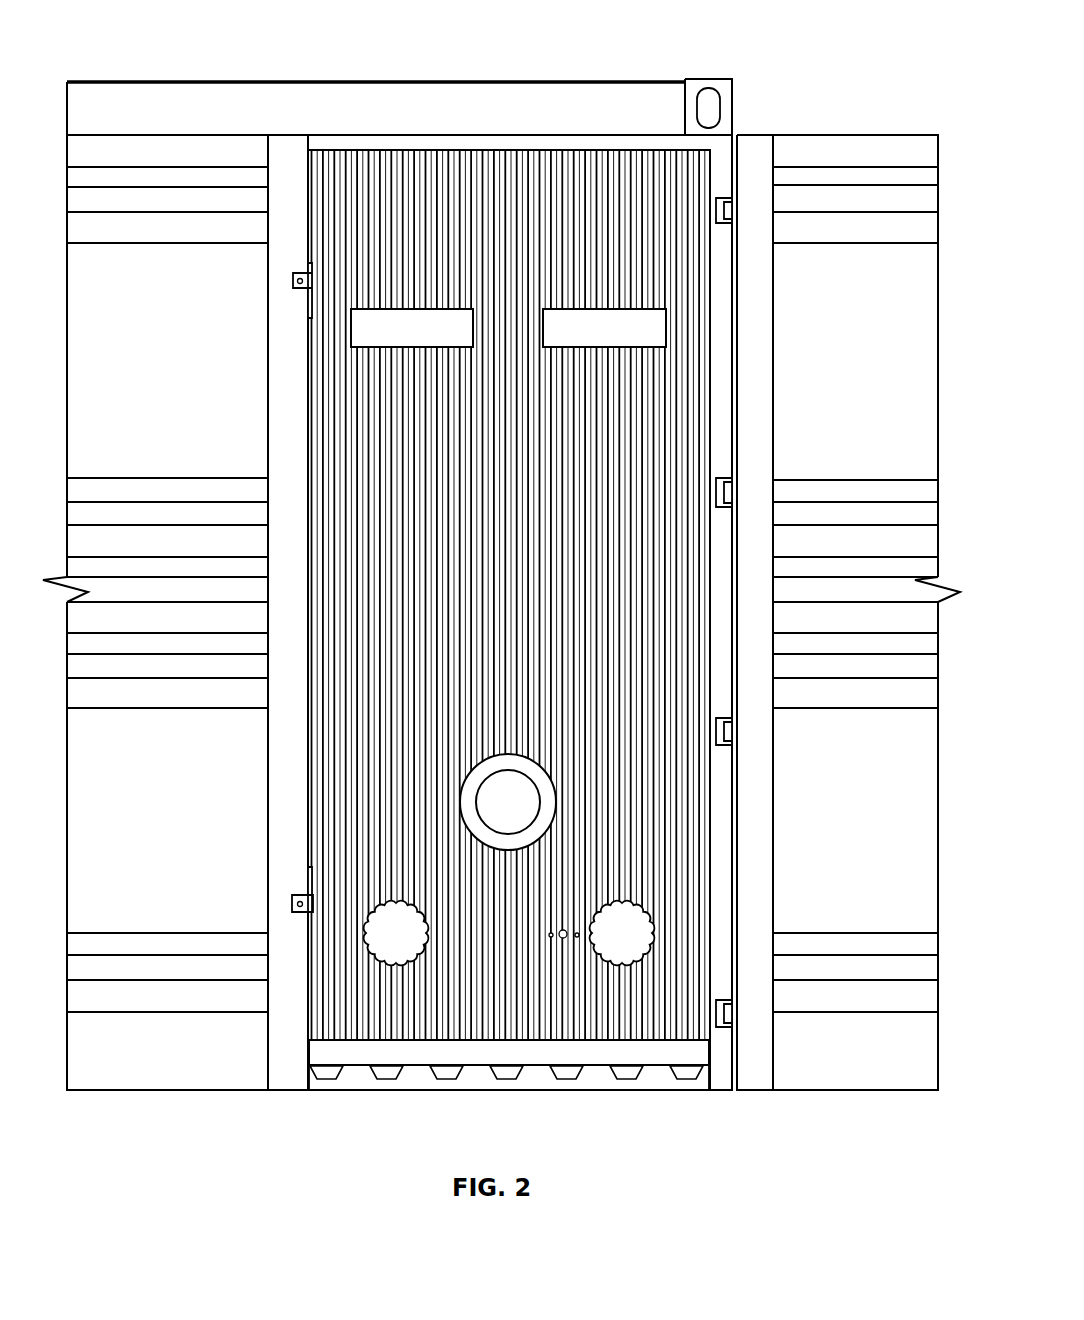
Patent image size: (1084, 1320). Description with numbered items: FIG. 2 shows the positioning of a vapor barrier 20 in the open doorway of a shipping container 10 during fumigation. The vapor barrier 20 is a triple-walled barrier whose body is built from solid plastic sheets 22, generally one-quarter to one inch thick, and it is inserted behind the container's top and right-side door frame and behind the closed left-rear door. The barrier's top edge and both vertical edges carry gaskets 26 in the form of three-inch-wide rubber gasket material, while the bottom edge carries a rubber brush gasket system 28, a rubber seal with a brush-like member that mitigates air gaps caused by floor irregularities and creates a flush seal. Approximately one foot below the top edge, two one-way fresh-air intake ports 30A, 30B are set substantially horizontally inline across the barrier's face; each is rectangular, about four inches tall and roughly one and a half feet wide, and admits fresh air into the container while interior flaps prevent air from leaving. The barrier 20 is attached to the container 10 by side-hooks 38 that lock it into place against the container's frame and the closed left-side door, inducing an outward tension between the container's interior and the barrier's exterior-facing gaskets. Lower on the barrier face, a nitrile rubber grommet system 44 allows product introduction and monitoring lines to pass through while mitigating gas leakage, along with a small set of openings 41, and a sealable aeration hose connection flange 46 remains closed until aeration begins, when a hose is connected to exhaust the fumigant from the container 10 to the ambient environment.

The container 10 is at (866, 64).
The vapor barrier 20 is at (570, 104).
The sheets 22 is at (400, 172).
The gaskets 26 is at (622, 116).
The rubber brush gasket system 28 is at (658, 1075).
The one-way fresh-air intake port 30A is at (420, 308).
The one-way fresh-air intake port 30B is at (615, 308).
The side-hooks 38 is at (293, 281).
The holes 41 is at (549, 940).
The nitrile rubber grommet system 44 is at (405, 965).
The sealable aeration hose connection flange 46 is at (508, 755).